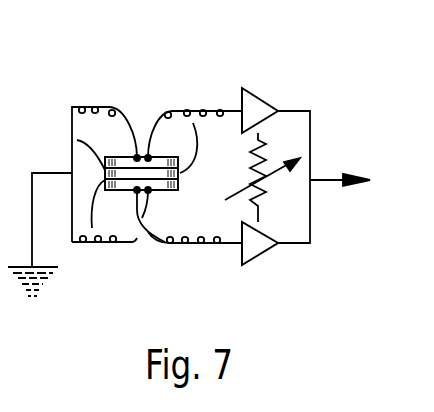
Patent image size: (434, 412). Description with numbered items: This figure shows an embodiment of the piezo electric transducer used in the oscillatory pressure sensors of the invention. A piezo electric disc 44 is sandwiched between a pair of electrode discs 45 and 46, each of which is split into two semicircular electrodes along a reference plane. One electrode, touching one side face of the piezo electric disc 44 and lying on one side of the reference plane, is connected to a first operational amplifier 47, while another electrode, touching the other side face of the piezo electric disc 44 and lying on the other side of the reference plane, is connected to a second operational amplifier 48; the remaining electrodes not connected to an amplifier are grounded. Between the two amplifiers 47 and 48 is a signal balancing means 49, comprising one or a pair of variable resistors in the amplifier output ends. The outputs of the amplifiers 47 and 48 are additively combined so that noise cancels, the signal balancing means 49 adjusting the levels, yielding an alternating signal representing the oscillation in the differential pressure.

The piezo electric disc 44 is at (187, 100).
The electrode disc 45 is at (67, 136).
The electrode disc 46 is at (98, 252).
The first operational amplifier 47 is at (258, 97).
The second operational amplifier 48 is at (260, 253).
The signal balancing means 49 is at (272, 183).